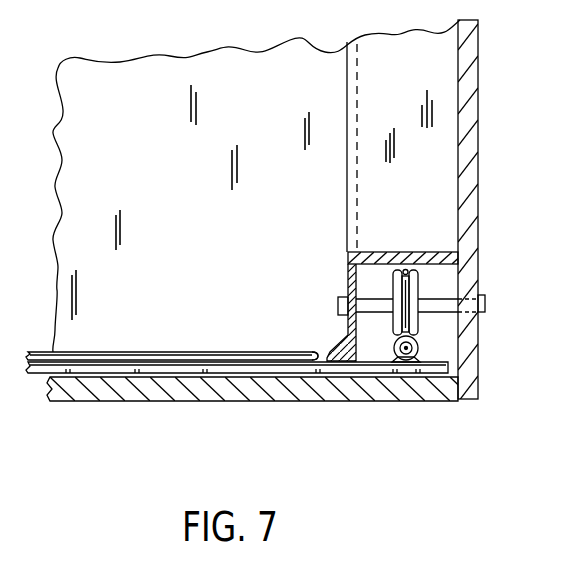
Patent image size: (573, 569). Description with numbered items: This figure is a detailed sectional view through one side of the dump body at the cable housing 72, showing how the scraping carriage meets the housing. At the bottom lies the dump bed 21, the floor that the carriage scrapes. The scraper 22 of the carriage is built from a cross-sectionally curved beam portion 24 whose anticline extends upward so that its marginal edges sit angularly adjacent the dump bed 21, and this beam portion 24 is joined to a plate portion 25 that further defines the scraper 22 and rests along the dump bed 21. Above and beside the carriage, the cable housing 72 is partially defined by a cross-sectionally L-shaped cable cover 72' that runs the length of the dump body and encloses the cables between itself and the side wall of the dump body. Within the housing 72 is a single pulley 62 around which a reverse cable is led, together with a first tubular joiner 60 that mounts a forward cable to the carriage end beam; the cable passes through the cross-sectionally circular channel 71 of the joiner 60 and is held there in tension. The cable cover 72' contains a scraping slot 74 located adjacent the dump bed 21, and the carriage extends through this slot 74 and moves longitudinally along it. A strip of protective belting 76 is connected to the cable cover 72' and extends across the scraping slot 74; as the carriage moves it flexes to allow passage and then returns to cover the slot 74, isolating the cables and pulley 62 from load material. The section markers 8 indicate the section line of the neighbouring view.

The section line 8- 8 is at (121, 294).
The dump bed 21 is at (117, 385).
The scraper 22 is at (173, 342).
The cross-sectionally curved beam portion 24 is at (222, 350).
The plate portion 25 is at (408, 368).
The first tubular joiner 60 is at (420, 356).
The single pulley 62 is at (420, 286).
The cross-sectionally circular channel 71 is at (418, 346).
The cable housing 72 is at (356, 271).
The cross-sectionally L-shaped cable cover 72' is at (403, 222).
The scraping slot 74 is at (330, 350).
The protective belting 76 is at (315, 355).